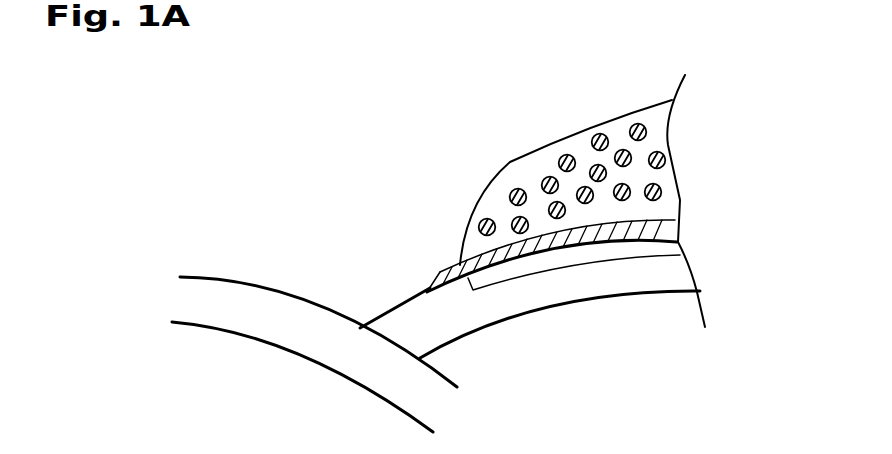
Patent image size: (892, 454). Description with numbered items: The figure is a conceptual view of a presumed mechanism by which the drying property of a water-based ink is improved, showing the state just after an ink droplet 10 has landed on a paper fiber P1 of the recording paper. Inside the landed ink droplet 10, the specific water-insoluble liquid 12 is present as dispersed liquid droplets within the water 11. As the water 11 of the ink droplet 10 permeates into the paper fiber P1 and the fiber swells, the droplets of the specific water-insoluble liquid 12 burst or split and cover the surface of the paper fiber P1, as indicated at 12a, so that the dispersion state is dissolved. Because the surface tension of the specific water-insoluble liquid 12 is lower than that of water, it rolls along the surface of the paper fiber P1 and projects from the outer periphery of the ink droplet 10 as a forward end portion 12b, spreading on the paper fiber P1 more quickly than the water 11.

The ink droplet 10 is at (634, 94).
The water 11 is at (583, 143).
The specific water-insoluble liquid 12 is at (545, 180).
The burst portion of the specific water-insoluble liquid covering the paper fiber 12a is at (570, 240).
The forward end portion of the specific water-insoluble liquid 12b is at (430, 283).
The paper fiber P1 is at (237, 338).